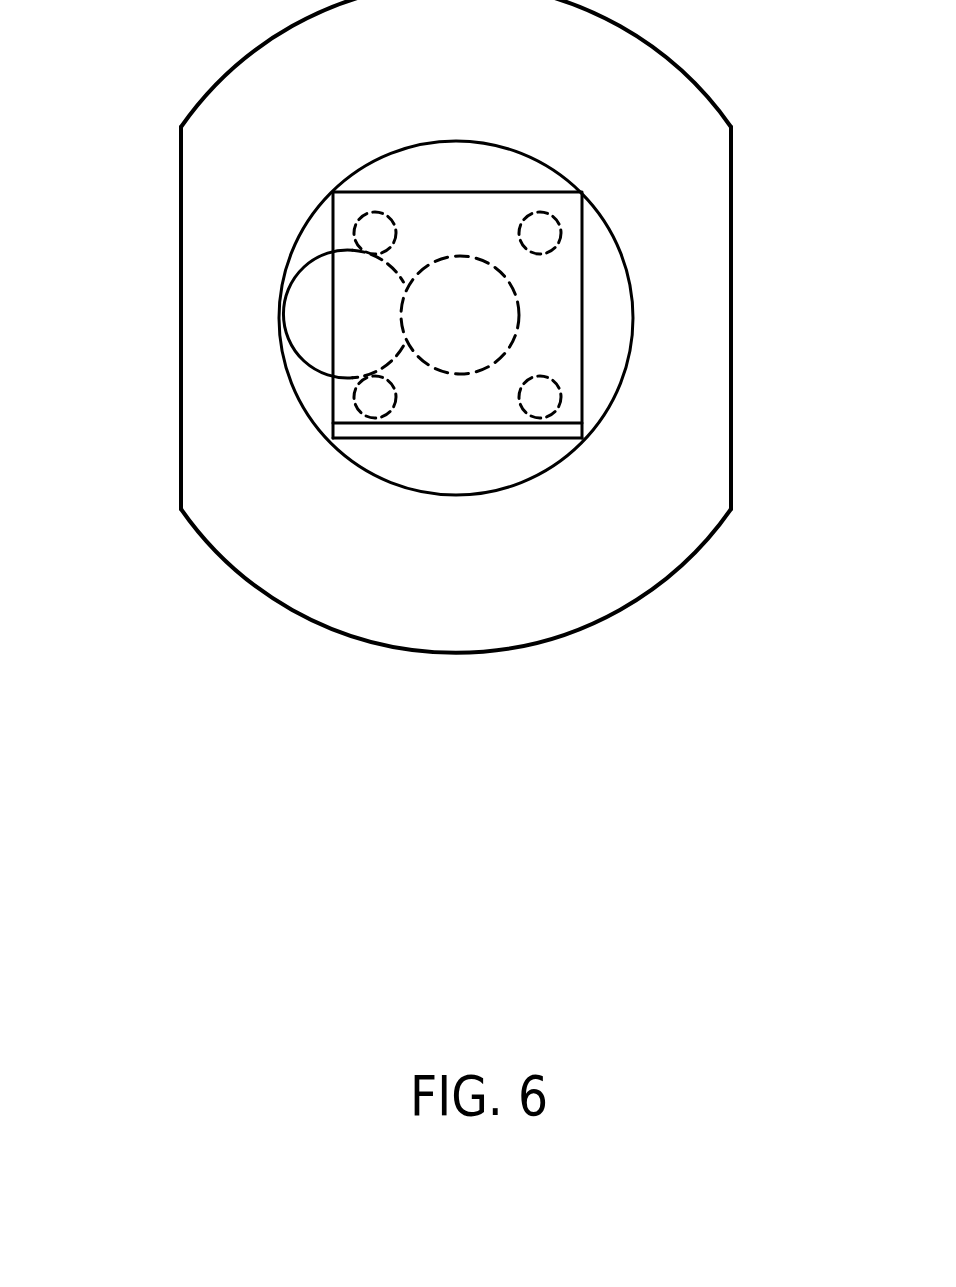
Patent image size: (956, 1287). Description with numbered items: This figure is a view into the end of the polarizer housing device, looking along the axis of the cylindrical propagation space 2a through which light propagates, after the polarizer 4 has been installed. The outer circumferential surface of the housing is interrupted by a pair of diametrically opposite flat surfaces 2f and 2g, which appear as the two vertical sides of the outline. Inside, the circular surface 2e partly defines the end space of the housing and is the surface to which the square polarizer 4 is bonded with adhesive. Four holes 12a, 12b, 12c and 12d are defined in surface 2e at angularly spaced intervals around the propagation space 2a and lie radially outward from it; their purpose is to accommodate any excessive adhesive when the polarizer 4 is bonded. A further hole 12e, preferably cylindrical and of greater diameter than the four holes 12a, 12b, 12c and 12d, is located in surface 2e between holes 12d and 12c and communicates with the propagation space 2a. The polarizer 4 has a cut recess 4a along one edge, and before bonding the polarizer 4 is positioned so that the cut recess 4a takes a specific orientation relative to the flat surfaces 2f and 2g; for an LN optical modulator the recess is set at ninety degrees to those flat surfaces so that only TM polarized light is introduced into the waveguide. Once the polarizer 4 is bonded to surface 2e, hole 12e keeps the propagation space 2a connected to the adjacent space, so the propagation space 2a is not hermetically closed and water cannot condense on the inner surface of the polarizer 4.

The propagation space 2a is at (497, 307).
The surface 2e is at (619, 333).
The flat surface 2f is at (178, 468).
The flat surface 2g is at (735, 415).
The polarizer 4 is at (572, 358).
The cut recess 4a is at (517, 431).
The hole 12a is at (541, 212).
The hole 12b is at (560, 400).
The hole 12c is at (376, 419).
The hole 12d is at (368, 212).
The hole 12e is at (296, 352).